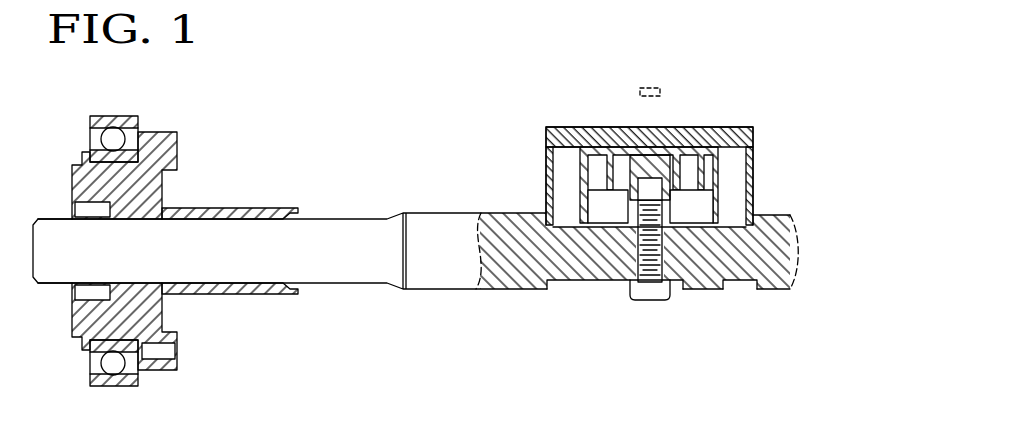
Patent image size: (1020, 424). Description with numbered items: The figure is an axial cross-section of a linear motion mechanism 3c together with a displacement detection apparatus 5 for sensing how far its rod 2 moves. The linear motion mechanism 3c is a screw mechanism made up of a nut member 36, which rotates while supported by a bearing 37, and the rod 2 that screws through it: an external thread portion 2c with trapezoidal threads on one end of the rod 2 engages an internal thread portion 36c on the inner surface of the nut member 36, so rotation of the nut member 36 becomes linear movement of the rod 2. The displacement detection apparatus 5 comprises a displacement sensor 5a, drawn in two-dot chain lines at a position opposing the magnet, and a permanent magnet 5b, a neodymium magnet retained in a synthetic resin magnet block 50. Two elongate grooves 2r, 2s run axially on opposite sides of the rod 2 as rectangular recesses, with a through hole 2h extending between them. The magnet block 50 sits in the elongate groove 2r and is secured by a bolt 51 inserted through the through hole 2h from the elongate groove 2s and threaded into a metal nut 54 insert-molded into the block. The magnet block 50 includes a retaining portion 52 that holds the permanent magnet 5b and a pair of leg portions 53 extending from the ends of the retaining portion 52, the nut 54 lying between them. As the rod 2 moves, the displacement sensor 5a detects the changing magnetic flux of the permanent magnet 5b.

The rod 2 is at (415, 267).
The external thread portion 2c is at (367, 283).
The elongate groove 2s is at (570, 282).
The elongate groove 2r is at (570, 226).
The through hole 2h is at (642, 283).
The linear motion mechanism 3c is at (288, 190).
The nut member 36 is at (214, 251).
The internal thread portion 36c is at (298, 284).
The bearing 37 is at (140, 124).
The displacement detection apparatus 5 is at (644, 194).
The displacement sensor 5a is at (655, 86).
The permanent magnet 5b is at (598, 137).
The magnet block 50 is at (644, 147).
The bolt 51 is at (657, 293).
The retaining portion 52 is at (753, 131).
The leg portions 53 is at (546, 165).
The nut 54 is at (655, 170).